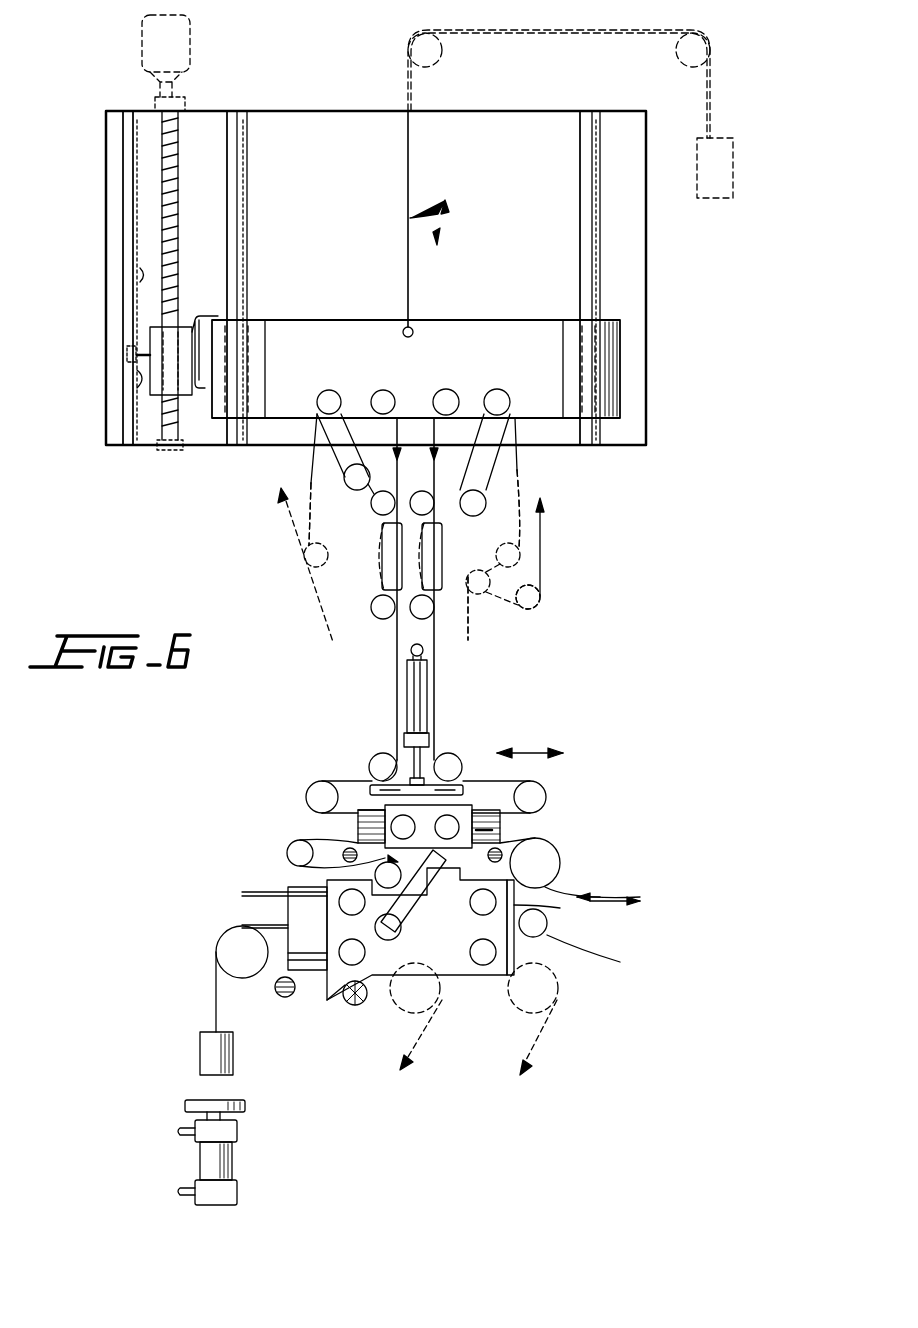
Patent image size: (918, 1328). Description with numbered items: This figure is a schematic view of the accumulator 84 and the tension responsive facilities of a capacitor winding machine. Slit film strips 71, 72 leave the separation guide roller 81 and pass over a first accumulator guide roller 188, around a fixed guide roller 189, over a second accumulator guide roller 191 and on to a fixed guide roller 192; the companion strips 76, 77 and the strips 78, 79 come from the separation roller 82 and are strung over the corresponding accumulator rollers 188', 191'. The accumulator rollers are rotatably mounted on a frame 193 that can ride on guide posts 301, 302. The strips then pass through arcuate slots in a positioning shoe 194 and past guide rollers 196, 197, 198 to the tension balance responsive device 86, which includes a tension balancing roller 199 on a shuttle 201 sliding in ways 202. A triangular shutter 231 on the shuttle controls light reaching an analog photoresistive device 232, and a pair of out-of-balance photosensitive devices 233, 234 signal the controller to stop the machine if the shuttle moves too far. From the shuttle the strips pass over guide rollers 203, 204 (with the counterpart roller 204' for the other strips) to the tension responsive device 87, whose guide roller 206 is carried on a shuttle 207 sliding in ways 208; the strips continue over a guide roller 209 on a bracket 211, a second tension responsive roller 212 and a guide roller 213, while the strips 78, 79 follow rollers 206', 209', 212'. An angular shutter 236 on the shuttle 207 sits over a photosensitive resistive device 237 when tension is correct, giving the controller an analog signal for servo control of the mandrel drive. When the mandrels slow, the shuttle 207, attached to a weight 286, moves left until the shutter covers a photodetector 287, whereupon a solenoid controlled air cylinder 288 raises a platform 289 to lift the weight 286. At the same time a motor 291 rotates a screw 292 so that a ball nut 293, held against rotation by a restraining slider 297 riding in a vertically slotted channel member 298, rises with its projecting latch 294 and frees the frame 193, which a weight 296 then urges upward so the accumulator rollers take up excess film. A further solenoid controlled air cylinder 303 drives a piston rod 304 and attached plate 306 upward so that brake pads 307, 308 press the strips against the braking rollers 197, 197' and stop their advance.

The laser scribed strip 71 is at (310, 480).
The laser scribed strip 72 is at (265, 511).
The laser scribed strip 76 is at (517, 475).
The laser scribed strip 77 is at (561, 509).
The scrap strip 78 is at (542, 552).
The scrap strip 79 is at (571, 580).
The separation guide roller 81 is at (310, 556).
The separation roller 82 is at (488, 582).
The accumulator 84 is at (372, 312).
The tension balance responsive device 86 is at (500, 838).
The tension responsive device 87 is at (547, 906).
The first accumulator guide roller 188 is at (315, 381).
The accumulator guide roller 188' is at (459, 379).
The fixed guide roller 189 is at (361, 490).
The second accumulator guide roller 191 is at (372, 377).
The accumulator guide roller 191' is at (512, 382).
The fixed guide roller 192 is at (378, 512).
The frame 193 is at (455, 318).
The positioning shoe 194 is at (388, 568).
The guide roller 196 is at (378, 617).
The braking roller 197 is at (349, 750).
The braking roller 197' is at (492, 742).
The guide roller 198 is at (306, 800).
The tension balancing roller 199 is at (358, 825).
The shuttle 201 is at (358, 832).
The ways 202 is at (505, 822).
The guide roller 203 is at (287, 853).
The guide roller 204 is at (266, 900).
The roller 204' is at (584, 868).
The guide roller 206 is at (246, 928).
The roller 206' is at (614, 888).
The shuttle 207 is at (520, 955).
The ways 208 is at (288, 923).
The guide roller 209 is at (419, 937).
The roller 209' is at (580, 927).
The bracket 211 is at (400, 917).
The second tension responsive roller 212 is at (377, 950).
The roller 212' is at (483, 978).
The guide roller 213 is at (435, 1000).
The triangular shutter 231 is at (385, 858).
The analog photoresistive device 232 is at (415, 892).
The out-of-balance photosensitive device 233 is at (343, 857).
The out-of-balance photosensitive device 234 is at (502, 858).
The angular shutter 236 is at (328, 992).
The photosensitive resistive device 237 is at (354, 1006).
The weight 286 is at (200, 1045).
The photodetector 287 is at (283, 998).
The solenoid controlled air cylinder 288 is at (235, 1150).
The platform 289 is at (245, 1105).
The motor 291 is at (192, 43).
The screw 292 is at (174, 194).
The ball nut 293 is at (152, 340).
The projecting latch 294 is at (216, 316).
The weight 296 is at (733, 180).
The restraining slider 297 is at (140, 380).
The vertically slotted channel member 298 is at (140, 272).
The guide post 301 is at (250, 238).
The guide post 302 is at (580, 172).
The solenoid controlled air cylinder 303 is at (428, 690).
The piston rod 304 is at (424, 762).
The plate 306 is at (372, 792).
The brake pad 307 is at (372, 786).
The brake pad 308 is at (505, 748).